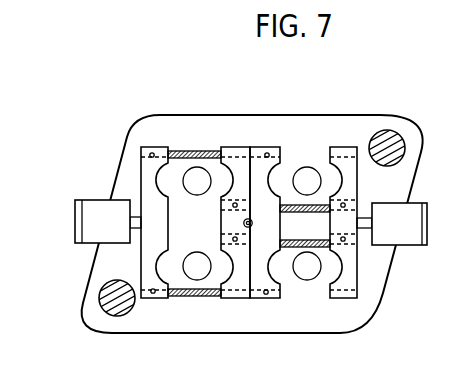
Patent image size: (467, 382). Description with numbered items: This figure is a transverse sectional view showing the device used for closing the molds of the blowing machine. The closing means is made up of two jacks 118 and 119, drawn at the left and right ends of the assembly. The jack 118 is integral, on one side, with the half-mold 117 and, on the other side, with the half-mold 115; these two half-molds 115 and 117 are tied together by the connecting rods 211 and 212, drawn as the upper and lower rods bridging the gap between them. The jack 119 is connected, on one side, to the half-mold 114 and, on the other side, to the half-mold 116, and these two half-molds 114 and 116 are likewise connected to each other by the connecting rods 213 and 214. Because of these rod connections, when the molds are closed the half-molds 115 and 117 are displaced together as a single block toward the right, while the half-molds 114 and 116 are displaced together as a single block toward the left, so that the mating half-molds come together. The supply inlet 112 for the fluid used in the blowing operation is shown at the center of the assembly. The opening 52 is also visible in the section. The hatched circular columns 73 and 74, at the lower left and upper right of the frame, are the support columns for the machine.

The aperture 52 is at (305, 177).
The support column 73 is at (102, 307).
The support column 74 is at (392, 144).
The supply inlet 112 is at (243, 223).
The half-mold 114 is at (237, 163).
The half-mold 115 is at (260, 162).
The half-mold 116 is at (340, 160).
The half-mold 117 is at (141, 171).
The jack 118 is at (90, 213).
The jack 119 is at (408, 213).
The connecting rod 211 is at (198, 155).
The connecting rod 212 is at (187, 292).
The connecting rod 213 is at (315, 209).
The connecting rod 214 is at (320, 245).